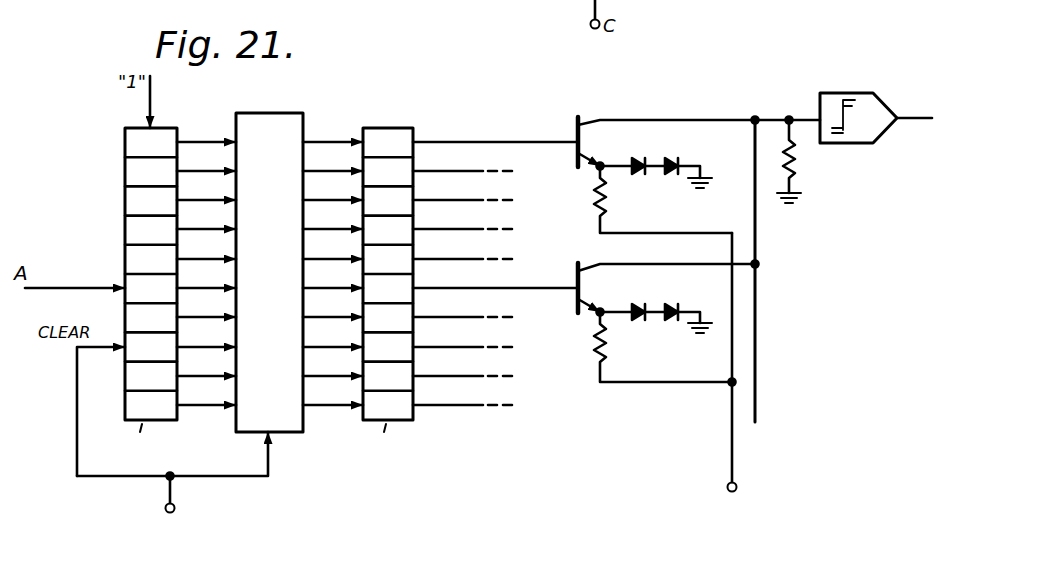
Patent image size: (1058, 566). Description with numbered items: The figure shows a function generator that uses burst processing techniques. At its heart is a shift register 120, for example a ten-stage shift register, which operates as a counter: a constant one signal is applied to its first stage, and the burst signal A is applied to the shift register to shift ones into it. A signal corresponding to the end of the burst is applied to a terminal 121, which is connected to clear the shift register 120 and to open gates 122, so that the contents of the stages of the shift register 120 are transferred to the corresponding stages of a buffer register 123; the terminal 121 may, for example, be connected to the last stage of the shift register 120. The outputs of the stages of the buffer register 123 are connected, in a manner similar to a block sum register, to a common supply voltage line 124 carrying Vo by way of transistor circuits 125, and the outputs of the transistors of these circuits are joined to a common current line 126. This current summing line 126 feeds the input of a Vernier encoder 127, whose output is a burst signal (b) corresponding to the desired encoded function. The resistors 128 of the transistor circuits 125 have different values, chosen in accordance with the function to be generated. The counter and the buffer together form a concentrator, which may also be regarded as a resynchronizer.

The shift register 120 is at (125, 163).
The terminal 121 is at (175, 509).
The gates 122 is at (293, 113).
The buffer register 123 is at (397, 129).
The common supply voltage line 124 is at (728, 420).
The transistor circuits 125 is at (577, 120).
The common current line 126 is at (757, 232).
The Vernier encoder 127 is at (858, 145).
The resistors 128 is at (594, 184).